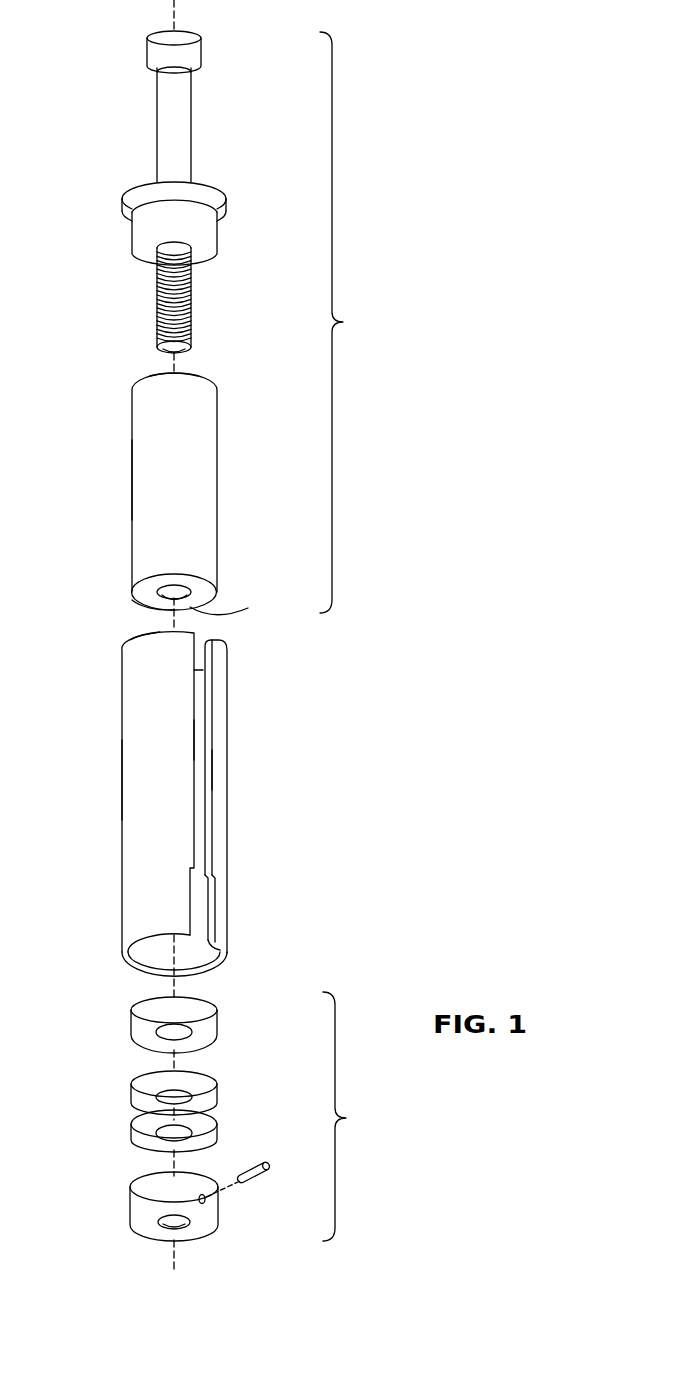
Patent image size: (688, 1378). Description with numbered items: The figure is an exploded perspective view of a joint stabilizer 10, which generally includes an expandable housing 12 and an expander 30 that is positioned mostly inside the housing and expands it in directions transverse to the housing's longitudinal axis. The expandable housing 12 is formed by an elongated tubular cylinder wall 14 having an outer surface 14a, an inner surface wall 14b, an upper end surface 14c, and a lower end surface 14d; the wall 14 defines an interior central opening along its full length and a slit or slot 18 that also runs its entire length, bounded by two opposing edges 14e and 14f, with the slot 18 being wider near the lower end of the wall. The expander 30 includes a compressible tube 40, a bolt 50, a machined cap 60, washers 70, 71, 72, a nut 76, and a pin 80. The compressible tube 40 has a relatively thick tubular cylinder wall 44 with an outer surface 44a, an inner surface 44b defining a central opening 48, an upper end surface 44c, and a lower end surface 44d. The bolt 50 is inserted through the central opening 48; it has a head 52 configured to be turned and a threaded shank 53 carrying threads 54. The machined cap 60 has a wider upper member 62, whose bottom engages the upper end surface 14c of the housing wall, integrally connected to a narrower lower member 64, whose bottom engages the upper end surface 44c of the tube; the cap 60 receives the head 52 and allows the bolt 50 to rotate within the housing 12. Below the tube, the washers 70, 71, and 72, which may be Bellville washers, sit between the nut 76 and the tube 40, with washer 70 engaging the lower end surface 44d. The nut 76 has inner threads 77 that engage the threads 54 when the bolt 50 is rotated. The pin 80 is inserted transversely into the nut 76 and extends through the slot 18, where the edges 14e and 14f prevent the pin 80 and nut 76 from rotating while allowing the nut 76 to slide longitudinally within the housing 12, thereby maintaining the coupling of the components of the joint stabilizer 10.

The joint stabilizer 10 is at (428, 167).
The expandable housing 12 is at (238, 661).
The tubular cylinder wall 14 is at (178, 808).
The outer surface 14a is at (145, 788).
The inner surface wall 14b is at (150, 953).
The first or upper end surface 14c is at (145, 642).
The second or lower end surface 14d is at (220, 952).
The opposing edge 14e is at (208, 775).
The opposing edge 14f is at (195, 745).
The slit or slot 18 is at (200, 647).
The expander 30 is at (352, 636).
The compressible tube 40 is at (170, 479).
The tubular cylinder wall 44 is at (170, 479).
The outer surface 44a is at (150, 480).
The inner surface 44b is at (162, 603).
The first or upper end surface 44c is at (152, 378).
The second or lower end surface 44d is at (213, 599).
The central opening 48 is at (207, 591).
The bolt 50 is at (172, 312).
The head 52 is at (147, 56).
The second end portion or shank 53 is at (180, 352).
The threads 54 is at (192, 299).
The machined cap 60 is at (141, 205).
The first or upper member 62 is at (125, 206).
The second or lower member 64 is at (130, 240).
The washer 70 is at (121, 1024).
The washer 71 is at (121, 1094).
The washer 72 is at (121, 1131).
The nut 76 is at (148, 1225).
The inner threads 77 is at (170, 1230).
The pin 80 is at (263, 1189).